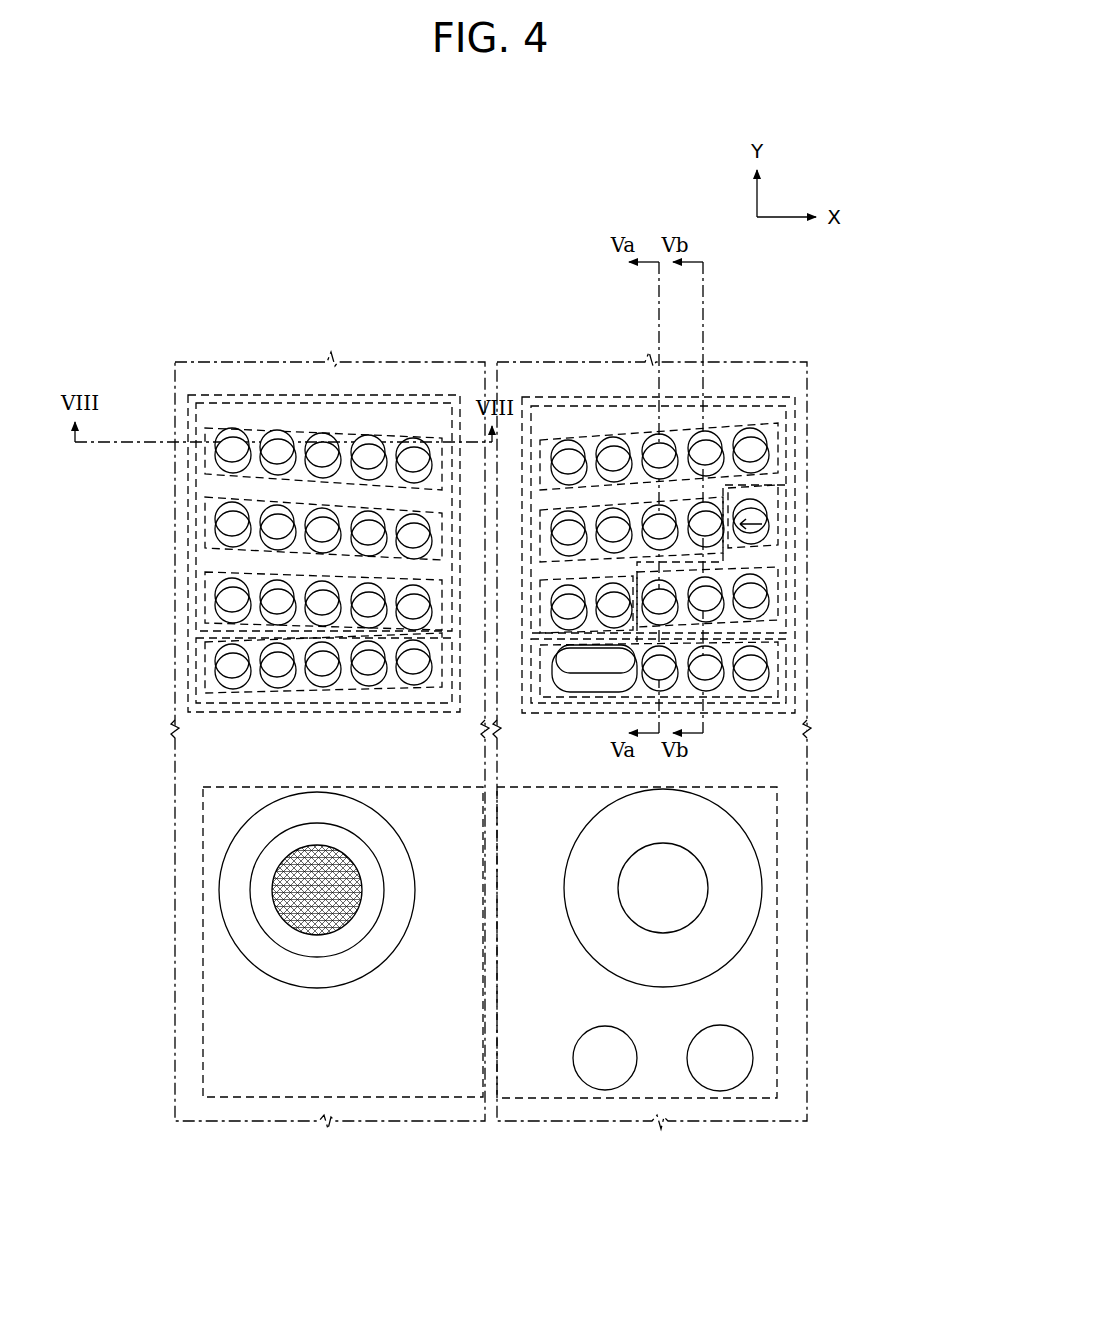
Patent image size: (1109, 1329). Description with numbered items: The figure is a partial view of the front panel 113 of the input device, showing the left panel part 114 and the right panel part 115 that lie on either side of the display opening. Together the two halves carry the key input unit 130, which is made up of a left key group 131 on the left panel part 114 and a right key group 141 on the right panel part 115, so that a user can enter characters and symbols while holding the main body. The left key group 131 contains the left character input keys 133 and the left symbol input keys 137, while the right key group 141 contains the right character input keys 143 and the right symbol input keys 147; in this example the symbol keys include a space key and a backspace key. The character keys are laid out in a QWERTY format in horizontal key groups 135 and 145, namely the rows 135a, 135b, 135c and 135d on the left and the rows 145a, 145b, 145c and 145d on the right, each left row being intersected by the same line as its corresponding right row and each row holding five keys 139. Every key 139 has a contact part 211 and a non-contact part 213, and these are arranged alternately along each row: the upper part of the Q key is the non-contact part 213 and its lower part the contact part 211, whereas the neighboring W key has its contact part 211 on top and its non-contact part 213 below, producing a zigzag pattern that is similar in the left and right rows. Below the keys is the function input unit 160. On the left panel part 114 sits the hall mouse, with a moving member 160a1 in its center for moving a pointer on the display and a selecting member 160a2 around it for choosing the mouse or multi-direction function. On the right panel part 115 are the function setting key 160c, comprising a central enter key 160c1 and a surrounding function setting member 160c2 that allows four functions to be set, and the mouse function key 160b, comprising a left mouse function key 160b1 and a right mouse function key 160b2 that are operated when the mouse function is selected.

The front panel 113 is at (490, 785).
The left panel part 114 is at (405, 1123).
The right panel part 115 is at (651, 768).
The key input unit 130 is at (748, 312).
The left key group 131 is at (250, 395).
The left character input keys 133 is at (308, 403).
The horizontal key groups 135 is at (254, 548).
The first horizontal key group 135a is at (205, 458).
The second horizontal key group 135b is at (205, 523).
The third horizontal key group 135c is at (205, 598).
The fourth horizontal key group 135d is at (279, 663).
The left symbol input keys 137 is at (326, 545).
The key 139 is at (430, 527).
The right key group 141 is at (742, 406).
The right character input keys 143 is at (593, 397).
The horizontal key groups 145 is at (726, 549).
The first horizontal key group 145a is at (778, 450).
The second horizontal key group 145b is at (778, 522).
The third horizontal key group 145c is at (778, 595).
The fourth horizontal key group 145d is at (700, 669).
The right symbol input keys 147 is at (645, 545).
The function input unit 160 is at (203, 1047).
The moving member 160a1 is at (275, 904).
The selecting member 160a2 is at (240, 851).
The mouse function key 160b is at (593, 1039).
The left mouse function key 160b1 is at (698, 1035).
The right mouse function key 160b2 is at (562, 1058).
The function setting key 160c is at (598, 888).
The enter key 160c1 is at (618, 880).
The function setting member 160c2 is at (583, 905).
The contact part 211 is at (240, 437).
The non-contact part 213 is at (215, 423).